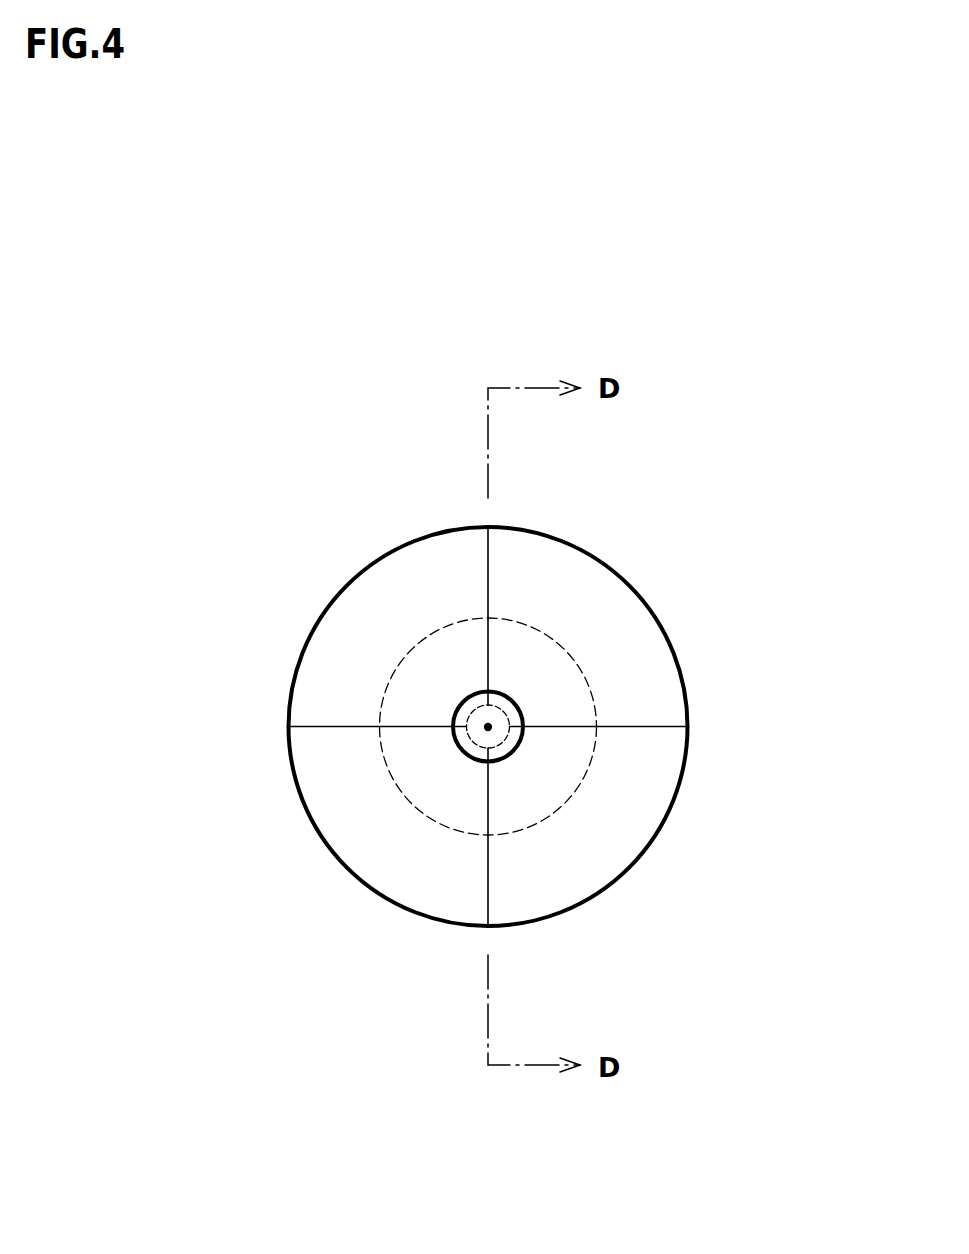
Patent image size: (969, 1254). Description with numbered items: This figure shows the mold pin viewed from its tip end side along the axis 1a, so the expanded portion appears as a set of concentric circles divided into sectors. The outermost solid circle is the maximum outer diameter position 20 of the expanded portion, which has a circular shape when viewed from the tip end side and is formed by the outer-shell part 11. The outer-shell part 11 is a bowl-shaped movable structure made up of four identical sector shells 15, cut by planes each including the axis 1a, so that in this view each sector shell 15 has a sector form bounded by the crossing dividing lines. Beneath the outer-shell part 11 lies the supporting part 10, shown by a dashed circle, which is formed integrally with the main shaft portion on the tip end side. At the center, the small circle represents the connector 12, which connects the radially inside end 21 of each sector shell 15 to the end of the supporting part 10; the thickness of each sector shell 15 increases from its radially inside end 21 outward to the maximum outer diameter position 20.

The axis 1a is at (486, 724).
The supporting part 10 is at (386, 773).
The outer-shell part 11 is at (798, 632).
The connector 12 is at (507, 705).
The sector shell 15 is at (390, 567).
The maximum outer diameter position 20 is at (660, 835).
The radially inside end 21 is at (472, 742).